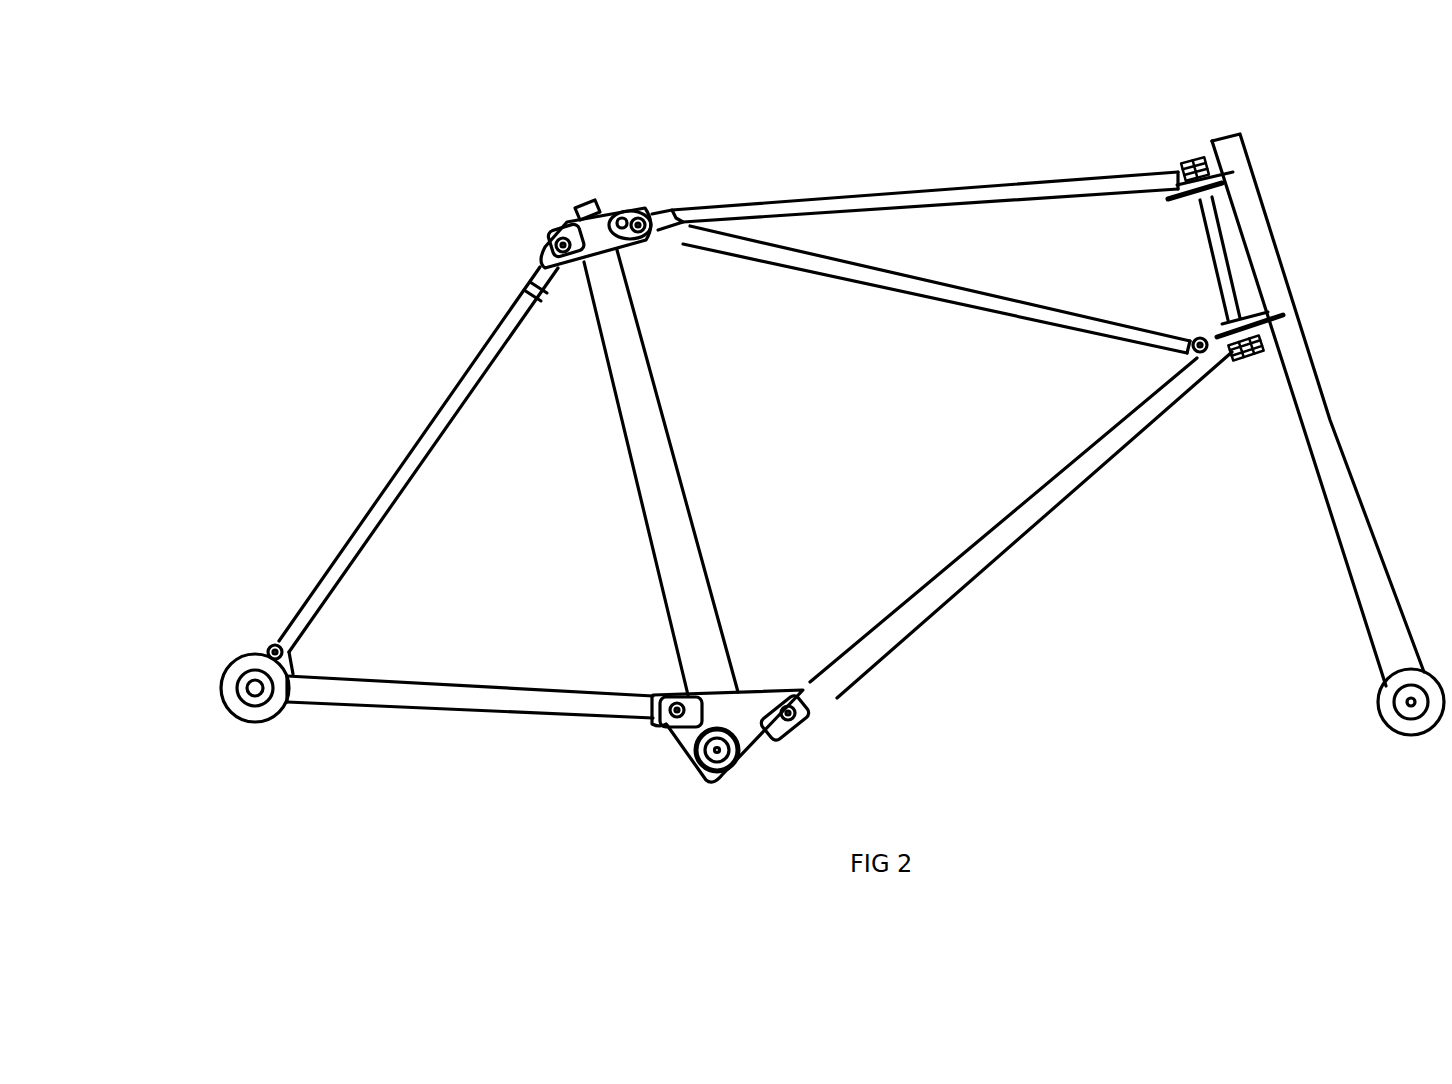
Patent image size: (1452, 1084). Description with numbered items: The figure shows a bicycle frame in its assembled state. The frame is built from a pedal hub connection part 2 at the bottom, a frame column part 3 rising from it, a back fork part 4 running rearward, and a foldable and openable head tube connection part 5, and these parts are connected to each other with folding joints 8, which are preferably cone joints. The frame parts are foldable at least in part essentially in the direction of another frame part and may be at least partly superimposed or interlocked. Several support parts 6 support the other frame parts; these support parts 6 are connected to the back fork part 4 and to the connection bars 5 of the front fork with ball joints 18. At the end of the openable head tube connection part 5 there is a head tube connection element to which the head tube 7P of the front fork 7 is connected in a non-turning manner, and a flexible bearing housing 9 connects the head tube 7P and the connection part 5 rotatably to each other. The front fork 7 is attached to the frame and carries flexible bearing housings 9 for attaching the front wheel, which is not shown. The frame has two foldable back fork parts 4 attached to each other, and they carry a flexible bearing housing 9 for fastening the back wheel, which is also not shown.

The pedal hub connection part 2 is at (753, 737).
The frame column part 3 is at (662, 487).
The back fork part 4 is at (443, 690).
The head tube connection part 5 is at (1030, 190).
The support part 6 is at (455, 400).
The front fork 7 is at (1352, 392).
The head tube 7P is at (1220, 244).
The folding joint 8 is at (557, 236).
The flexible bearing housing 9 is at (240, 688).
The ball joint 18 is at (1188, 357).